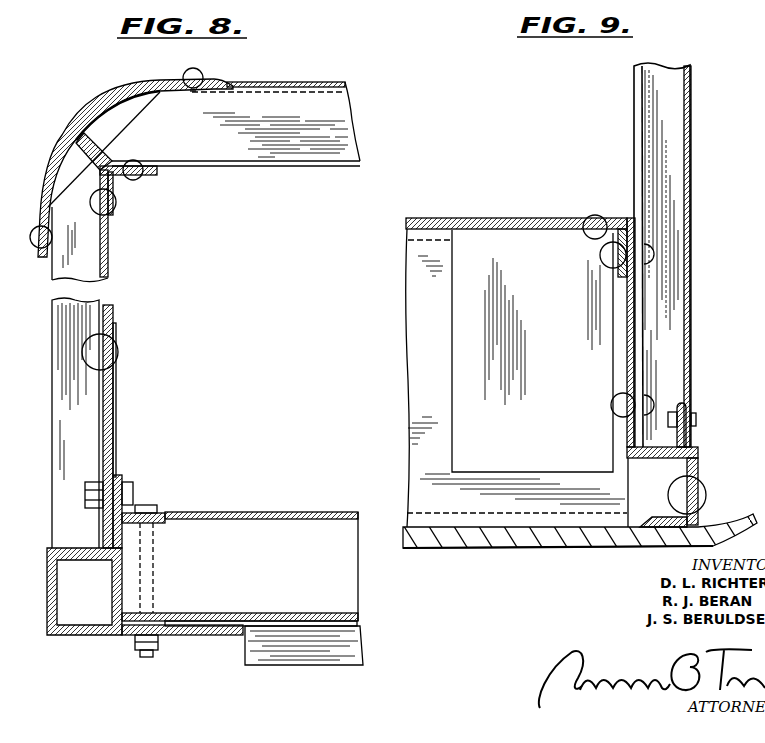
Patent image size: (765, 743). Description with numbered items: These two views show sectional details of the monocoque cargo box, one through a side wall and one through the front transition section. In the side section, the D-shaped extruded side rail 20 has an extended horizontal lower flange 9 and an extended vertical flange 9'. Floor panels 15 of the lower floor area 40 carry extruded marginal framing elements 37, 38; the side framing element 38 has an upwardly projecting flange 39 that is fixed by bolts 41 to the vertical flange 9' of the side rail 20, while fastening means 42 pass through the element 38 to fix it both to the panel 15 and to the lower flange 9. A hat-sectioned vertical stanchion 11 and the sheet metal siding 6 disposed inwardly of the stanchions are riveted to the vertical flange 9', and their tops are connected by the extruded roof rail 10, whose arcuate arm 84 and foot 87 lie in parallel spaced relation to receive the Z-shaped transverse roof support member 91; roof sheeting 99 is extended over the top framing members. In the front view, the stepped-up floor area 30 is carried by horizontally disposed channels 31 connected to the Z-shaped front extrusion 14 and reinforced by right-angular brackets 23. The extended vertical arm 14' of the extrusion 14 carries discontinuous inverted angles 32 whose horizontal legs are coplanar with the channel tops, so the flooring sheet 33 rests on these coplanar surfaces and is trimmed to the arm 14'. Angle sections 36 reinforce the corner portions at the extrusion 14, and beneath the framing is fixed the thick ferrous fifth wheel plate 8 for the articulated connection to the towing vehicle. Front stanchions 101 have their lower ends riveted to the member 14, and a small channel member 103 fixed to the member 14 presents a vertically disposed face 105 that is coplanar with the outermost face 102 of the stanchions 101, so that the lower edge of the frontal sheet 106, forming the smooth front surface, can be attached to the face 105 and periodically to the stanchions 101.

In FIG. 8, the sheet metal siding 6 is at (107, 268).
In FIG. 9, the fifth wheel structure 8 is at (543, 538).
In FIG. 8, the horizontal lower flange 9 is at (182, 648).
In FIG. 8, the vertical flange 9' is at (117, 426).
In FIG. 8, the roof rail member 10 is at (90, 133).
In FIG. 8, the vertical stanchion 11 is at (52, 467).
In FIG. 9, the horizontally extending extrusion 14 is at (688, 482).
In FIG. 9, the extended arm 14' is at (669, 332).
In FIG. 8, the panel 15 is at (262, 566).
In FIG. 8, the side rail 20 is at (80, 641).
In FIG. 9, the right-angular reinforcing bracket 23 is at (558, 427).
In FIG. 9, the floor area 30 is at (502, 210).
In FIG. 9, the horizontally disposed channel 31 is at (432, 374).
In FIG. 9, the discontinuous inverted angle 32 is at (617, 221).
In FIG. 9, the flooring sheet 33 is at (541, 218).
In FIG. 9, the angle section 36 is at (690, 493).
In FIG. 8, the marginal framing element 37 is at (360, 621).
In FIG. 8, the marginal framing element 38 is at (158, 513).
In FIG. 8, the outwardly projecting flange 39 is at (120, 474).
In FIG. 8, the floor area 40 is at (264, 504).
In FIG. 8, the bolt 41 is at (133, 493).
In FIG. 8, the fastening means 42 is at (148, 658).
In FIG. 8, the arcuate cap arm 84 is at (196, 93).
In FIG. 8, the foot 87 is at (153, 175).
In FIG. 8, the transverse roof support member 91 is at (312, 113).
In FIG. 8, the roof sheeting 99 is at (233, 82).
In FIG. 9, the front stanchion 101 is at (640, 206).
In FIG. 9, the outermost face 102 is at (680, 248).
In FIG. 9, the channel member 103 is at (696, 420).
In FIG. 9, the vertically disposed face 105 is at (683, 403).
In FIG. 9, the frontal sheet 106 is at (688, 287).